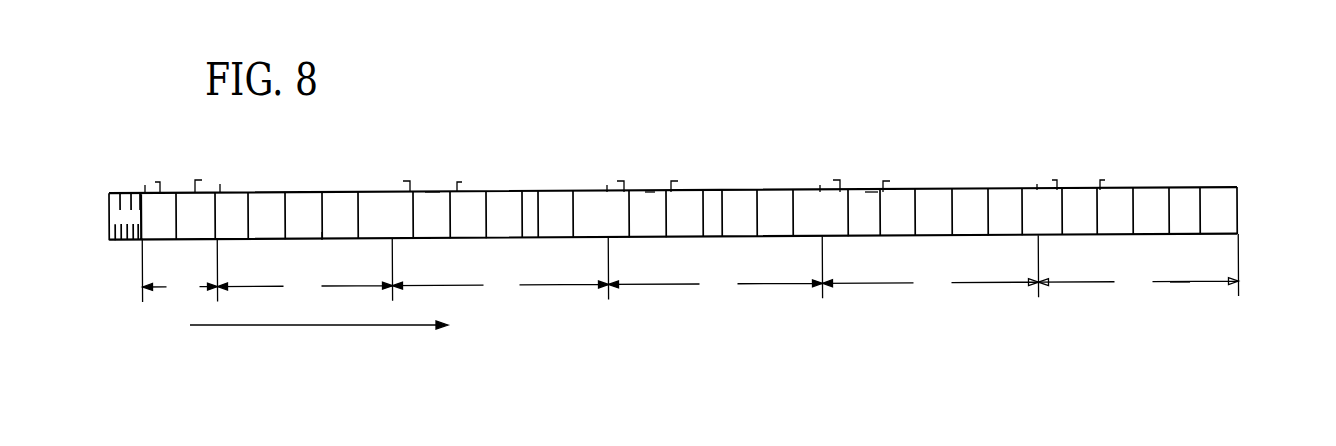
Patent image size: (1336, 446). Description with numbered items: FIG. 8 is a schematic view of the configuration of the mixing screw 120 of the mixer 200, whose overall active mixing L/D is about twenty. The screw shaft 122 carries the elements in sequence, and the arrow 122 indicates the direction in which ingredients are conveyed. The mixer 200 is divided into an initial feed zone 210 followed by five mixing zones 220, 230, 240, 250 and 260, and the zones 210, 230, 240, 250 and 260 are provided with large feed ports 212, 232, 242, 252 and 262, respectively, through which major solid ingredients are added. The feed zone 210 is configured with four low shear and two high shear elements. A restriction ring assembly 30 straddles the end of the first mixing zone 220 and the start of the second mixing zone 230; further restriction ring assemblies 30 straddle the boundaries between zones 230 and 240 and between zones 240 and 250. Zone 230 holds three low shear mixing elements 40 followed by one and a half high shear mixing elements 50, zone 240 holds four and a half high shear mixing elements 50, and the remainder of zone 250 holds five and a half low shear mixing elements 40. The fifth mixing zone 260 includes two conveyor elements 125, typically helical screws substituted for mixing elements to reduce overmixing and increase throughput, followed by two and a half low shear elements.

The mixing screw 120 is at (1238, 211).
The screw shaft 122 is at (320, 326).
The conveyor element 125 is at (323, 243).
The mixer 200 is at (1178, 290).
The initial feed zone 210 is at (179, 271).
The first mixing zone 220 is at (304, 270).
The second mixing zone 230 is at (500, 268).
The third mixing zone 240 is at (715, 267).
The fourth mixing zone 250 is at (930, 266).
The fifth mixing zone 260 is at (1138, 265).
The first large feed port 212 is at (195, 192).
The second large feed port 232 is at (430, 192).
The large feed port 242 is at (650, 190).
The large feed port 252 is at (873, 197).
The large feed port 262 is at (1093, 192).
The low shear mixing element 40 is at (182, 197).
The high shear mixing element 50 is at (330, 197).
The restriction ring assembly 30 is at (372, 198).